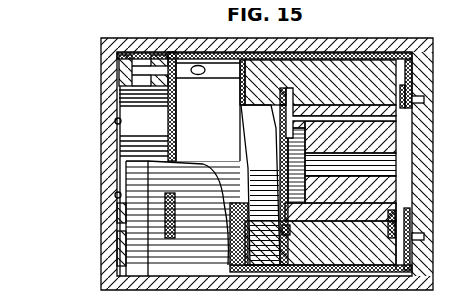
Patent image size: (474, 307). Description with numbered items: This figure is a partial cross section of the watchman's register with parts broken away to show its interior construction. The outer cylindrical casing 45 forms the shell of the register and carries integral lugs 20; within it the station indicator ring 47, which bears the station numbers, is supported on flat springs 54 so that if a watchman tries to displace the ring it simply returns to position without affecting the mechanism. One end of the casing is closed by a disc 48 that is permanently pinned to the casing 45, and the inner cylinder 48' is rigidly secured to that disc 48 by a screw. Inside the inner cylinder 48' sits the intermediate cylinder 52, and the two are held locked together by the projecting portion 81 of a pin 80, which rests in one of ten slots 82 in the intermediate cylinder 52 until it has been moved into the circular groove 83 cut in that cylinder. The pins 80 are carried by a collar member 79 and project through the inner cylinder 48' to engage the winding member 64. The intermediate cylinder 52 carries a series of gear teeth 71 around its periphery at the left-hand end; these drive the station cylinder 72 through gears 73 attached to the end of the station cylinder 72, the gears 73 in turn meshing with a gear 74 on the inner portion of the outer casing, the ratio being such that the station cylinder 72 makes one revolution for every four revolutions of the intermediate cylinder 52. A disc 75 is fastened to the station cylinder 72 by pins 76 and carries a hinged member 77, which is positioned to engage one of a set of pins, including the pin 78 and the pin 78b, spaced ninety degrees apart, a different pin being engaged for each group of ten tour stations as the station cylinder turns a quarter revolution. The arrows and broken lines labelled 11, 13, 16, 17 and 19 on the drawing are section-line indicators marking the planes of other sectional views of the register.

The section line 11 is at (106, 3).
The section line 13 is at (299, 3).
The section line 16 is at (402, 31).
The section line 17 is at (166, 30).
The section line 19 is at (292, 73).
The lugs 20 is at (393, 3).
The outer cylindrical casing 45 is at (283, 275).
The station indicator ring 47 is at (110, 253).
The disc 48 is at (281, 164).
The inner cylinder 48' is at (255, 185).
The intermediate cylinder 52 is at (211, 117).
The flat springs 54 is at (128, 63).
The winding member 64 is at (298, 137).
The gear teeth 71 is at (160, 106).
The station cylinder 72 is at (313, 49).
The gears 73 is at (172, 67).
The gear 74 is at (170, 45).
The disc 75 is at (401, 257).
The pins 76 is at (415, 295).
The hinged member 77 is at (410, 80).
The pin 78 is at (405, 91).
The pin 78b is at (405, 228).
The collar member 79 is at (388, 205).
The pins 80 is at (362, 118).
The projecting portion 81 is at (286, 92).
The slots 82 is at (295, 77).
The circular groove 83 is at (266, 97).